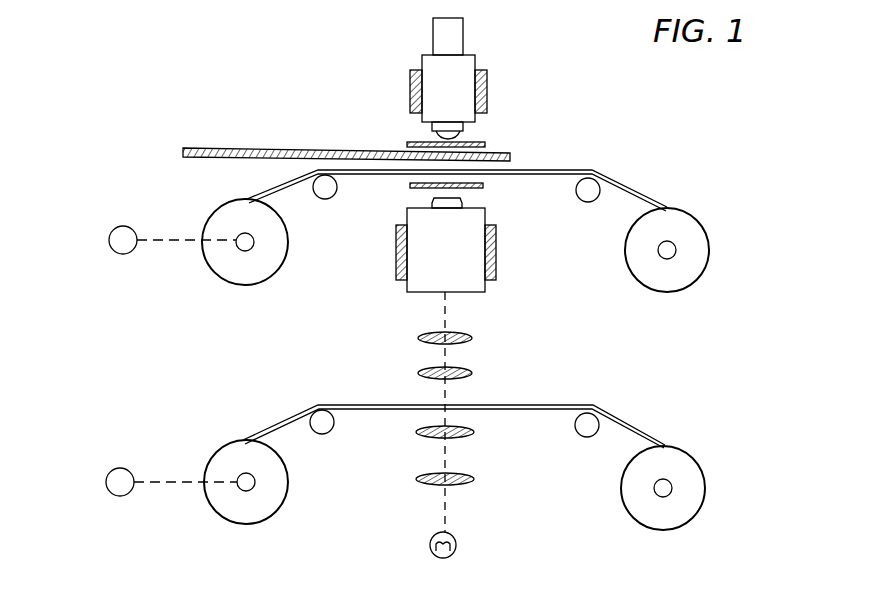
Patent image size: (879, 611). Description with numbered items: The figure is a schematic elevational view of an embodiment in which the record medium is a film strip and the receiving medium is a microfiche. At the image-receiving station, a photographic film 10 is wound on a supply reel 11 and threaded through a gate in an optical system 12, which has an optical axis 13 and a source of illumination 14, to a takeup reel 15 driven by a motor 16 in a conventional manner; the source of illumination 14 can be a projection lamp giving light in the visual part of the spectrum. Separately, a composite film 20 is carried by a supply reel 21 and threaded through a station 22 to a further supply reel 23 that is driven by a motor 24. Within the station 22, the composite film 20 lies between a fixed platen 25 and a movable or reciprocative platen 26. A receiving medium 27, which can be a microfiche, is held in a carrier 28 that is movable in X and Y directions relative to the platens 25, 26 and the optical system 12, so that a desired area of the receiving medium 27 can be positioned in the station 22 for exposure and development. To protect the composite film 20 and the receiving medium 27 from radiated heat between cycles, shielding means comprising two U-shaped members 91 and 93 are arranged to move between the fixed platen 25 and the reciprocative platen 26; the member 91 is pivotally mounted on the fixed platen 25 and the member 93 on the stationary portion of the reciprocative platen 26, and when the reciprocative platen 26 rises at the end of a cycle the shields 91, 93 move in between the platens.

The photographic film 10 is at (620, 422).
The supply reel 11 is at (700, 483).
The optical system 12 is at (468, 357).
The optical axis 13 is at (447, 313).
The source of illumination 14 is at (455, 537).
The takeup reel 15 is at (275, 490).
The motor 16 is at (120, 468).
The composite film 20 is at (622, 184).
The supply reel 21 is at (705, 248).
The station 22 is at (499, 151).
The supply reel 23 is at (270, 256).
The motor 24 is at (128, 227).
The fixed platen 25 is at (493, 219).
The reciprocative platen 26 is at (413, 64).
The receiving medium 27 is at (240, 150).
The carrier 28 is at (205, 161).
The U-shaped member 91 is at (408, 186).
The U-shaped member 93 is at (410, 143).